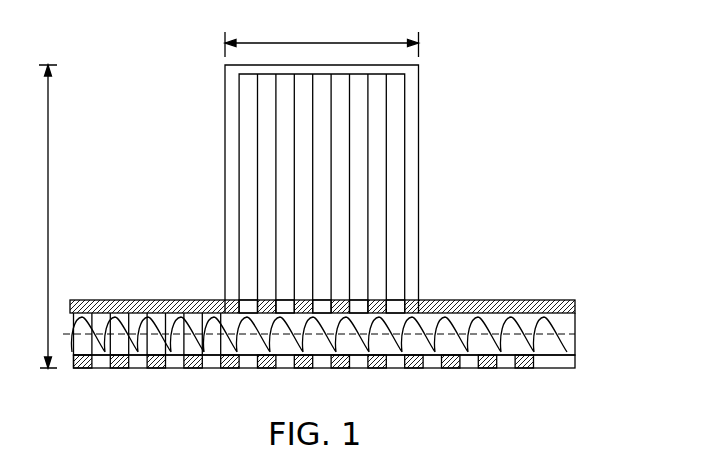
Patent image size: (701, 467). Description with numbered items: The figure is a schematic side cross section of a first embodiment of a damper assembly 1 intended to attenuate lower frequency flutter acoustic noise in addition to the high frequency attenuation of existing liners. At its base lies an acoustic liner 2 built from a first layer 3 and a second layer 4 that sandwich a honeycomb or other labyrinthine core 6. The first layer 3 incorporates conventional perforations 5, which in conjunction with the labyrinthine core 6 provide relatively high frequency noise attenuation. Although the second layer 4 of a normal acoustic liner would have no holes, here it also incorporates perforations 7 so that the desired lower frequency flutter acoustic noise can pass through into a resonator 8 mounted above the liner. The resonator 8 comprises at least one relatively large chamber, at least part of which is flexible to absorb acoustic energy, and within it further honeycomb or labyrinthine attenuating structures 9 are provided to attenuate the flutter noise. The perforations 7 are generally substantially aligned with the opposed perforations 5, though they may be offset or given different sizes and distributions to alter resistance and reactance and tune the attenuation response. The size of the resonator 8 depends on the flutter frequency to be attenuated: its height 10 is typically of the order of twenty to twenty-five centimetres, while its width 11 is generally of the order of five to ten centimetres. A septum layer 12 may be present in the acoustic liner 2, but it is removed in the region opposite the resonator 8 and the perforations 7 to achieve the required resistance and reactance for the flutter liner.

The damper assembly 1 is at (559, 204).
The acoustic liner 2 is at (602, 302).
The first layer 3 is at (542, 366).
The second layer 4 is at (533, 300).
The perforations 5 is at (139, 361).
The labyrinthine core 6 is at (74, 357).
The perforations 7 is at (250, 300).
The resonator 8 is at (418, 97).
The attenuating structures 9 is at (330, 192).
The height 10 is at (32, 216).
The width 11 is at (322, 35).
The septum layer 12 is at (177, 356).